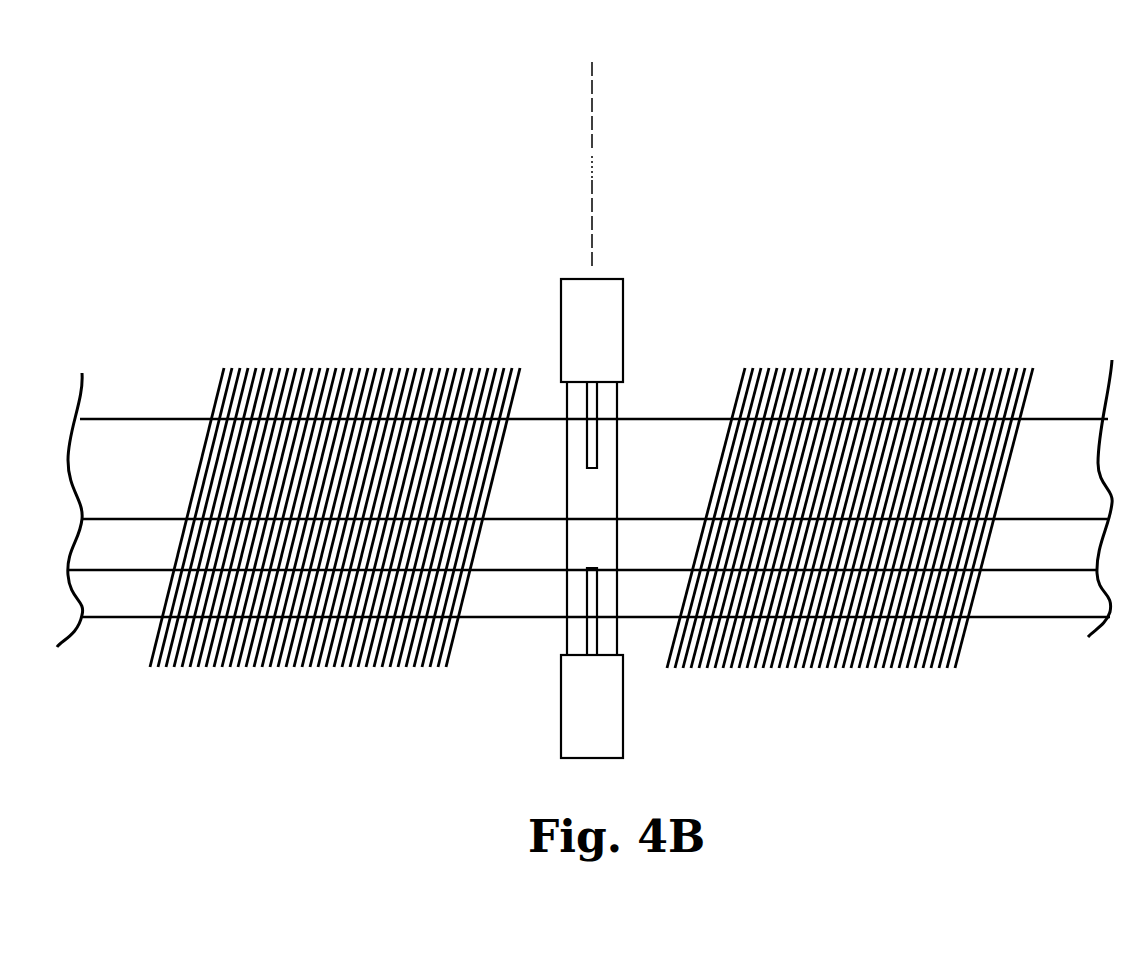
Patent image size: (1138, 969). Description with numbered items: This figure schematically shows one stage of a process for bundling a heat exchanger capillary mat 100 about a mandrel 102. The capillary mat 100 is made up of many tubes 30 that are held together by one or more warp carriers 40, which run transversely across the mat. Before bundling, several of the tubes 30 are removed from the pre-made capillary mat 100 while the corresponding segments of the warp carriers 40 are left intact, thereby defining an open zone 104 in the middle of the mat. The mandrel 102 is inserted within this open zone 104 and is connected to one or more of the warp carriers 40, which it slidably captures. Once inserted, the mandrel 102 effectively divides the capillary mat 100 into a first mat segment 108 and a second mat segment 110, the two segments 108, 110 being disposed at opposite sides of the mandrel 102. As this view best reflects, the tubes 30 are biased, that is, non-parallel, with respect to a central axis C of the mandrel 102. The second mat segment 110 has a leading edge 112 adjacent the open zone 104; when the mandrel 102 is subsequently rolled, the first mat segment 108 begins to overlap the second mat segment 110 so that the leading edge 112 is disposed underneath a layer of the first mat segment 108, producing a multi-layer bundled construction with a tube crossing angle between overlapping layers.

The central axis C is at (592, 104).
The tubes 30 is at (346, 668).
The warp carriers 40 is at (153, 418).
The heat exchanger capillary mat 100 is at (321, 360).
The mandrel 102 is at (605, 340).
The open zone 104 is at (679, 447).
The first mat segment 108 is at (258, 668).
The second mat segment 110 is at (838, 668).
The leading edge 112 is at (708, 488).